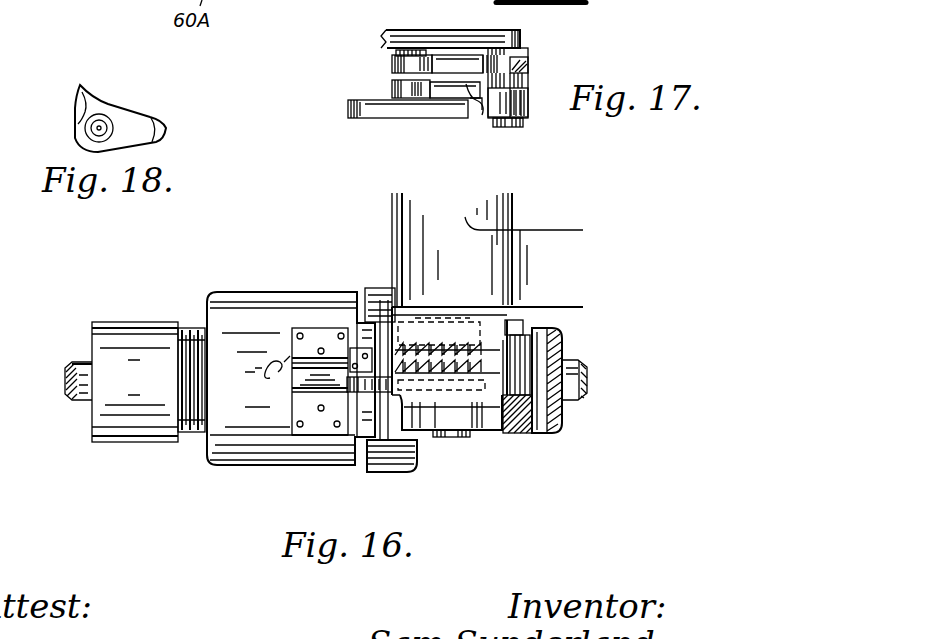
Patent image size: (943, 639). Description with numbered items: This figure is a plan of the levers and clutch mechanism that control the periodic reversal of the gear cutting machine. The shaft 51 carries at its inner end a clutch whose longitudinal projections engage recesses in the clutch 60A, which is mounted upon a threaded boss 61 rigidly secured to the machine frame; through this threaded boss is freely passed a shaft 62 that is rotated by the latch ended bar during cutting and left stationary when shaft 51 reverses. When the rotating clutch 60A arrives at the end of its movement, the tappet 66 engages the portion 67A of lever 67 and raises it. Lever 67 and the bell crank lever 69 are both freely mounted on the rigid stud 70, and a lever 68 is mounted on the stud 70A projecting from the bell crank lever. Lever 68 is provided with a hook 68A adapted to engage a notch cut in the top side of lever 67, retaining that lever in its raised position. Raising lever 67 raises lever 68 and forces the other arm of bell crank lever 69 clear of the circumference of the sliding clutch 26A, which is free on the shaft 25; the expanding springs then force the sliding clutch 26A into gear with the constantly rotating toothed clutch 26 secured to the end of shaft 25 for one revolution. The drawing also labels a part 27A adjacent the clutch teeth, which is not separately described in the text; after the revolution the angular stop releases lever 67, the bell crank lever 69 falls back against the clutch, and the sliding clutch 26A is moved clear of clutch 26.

In FIG. 16, the shaft 25 is at (458, 437).
In FIG. 16, the toothed clutch 26 is at (476, 426).
In FIG. 16, the sliding clutch 26A is at (470, 322).
In FIG. 16, the ratchet teeth 27A is at (516, 324).
In FIG. 16, the shaft 51 is at (572, 376).
In FIG. 16, the clutch 60A is at (247, 327).
In FIG. 16, the threaded boss 61 is at (188, 328).
In FIG. 16, the shaft 62 is at (78, 366).
In FIG. 16, the tappet 66 is at (368, 448).
In FIG. 17, the lever 67 is at (402, 104).
In FIG. 16, the lever 67 is at (388, 393).
In FIG. 17, the engaging portion of lever 67A is at (350, 106).
In FIG. 16, the engaging portion of lever 67A is at (343, 394).
In FIG. 18, the lever 68 is at (80, 100).
In FIG. 17, the lever 68 is at (393, 90).
In FIG. 16, the lever 68 is at (393, 345).
In FIG. 18, the hook 68A is at (163, 125).
In FIG. 17, the hook 68A is at (478, 112).
In FIG. 17, the bell crank lever 69 is at (458, 62).
In FIG. 16, the bell crank lever 69 is at (456, 315).
In FIG. 17, the fixed stud 70 is at (512, 126).
In FIG. 16, the fixed stud 70 is at (528, 398).
In FIG. 17, the stud 70A is at (408, 55).
In FIG. 16, the stud 70A is at (393, 320).